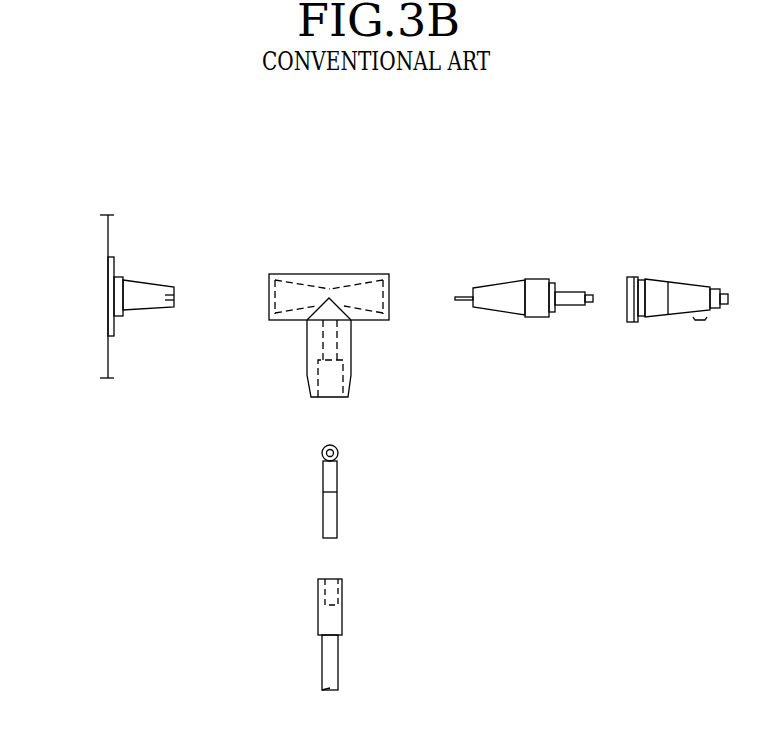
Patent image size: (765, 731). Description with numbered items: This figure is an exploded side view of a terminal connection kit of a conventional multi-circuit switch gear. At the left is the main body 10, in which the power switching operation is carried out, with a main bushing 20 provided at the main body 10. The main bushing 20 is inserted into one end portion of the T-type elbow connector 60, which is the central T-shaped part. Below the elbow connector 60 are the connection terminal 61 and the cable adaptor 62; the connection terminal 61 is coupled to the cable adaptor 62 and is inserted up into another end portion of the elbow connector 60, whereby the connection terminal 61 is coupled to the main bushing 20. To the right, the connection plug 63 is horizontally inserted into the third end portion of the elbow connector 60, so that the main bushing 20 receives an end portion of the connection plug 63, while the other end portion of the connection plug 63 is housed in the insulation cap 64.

The main body 10 is at (80, 284).
The main bushing 20 is at (153, 290).
The T-type elbow connector 60 is at (327, 280).
The connection terminal 61 is at (333, 501).
The cable adaptor 62 is at (340, 624).
The connection plug 63 is at (540, 290).
The insulation cap 64 is at (657, 290).